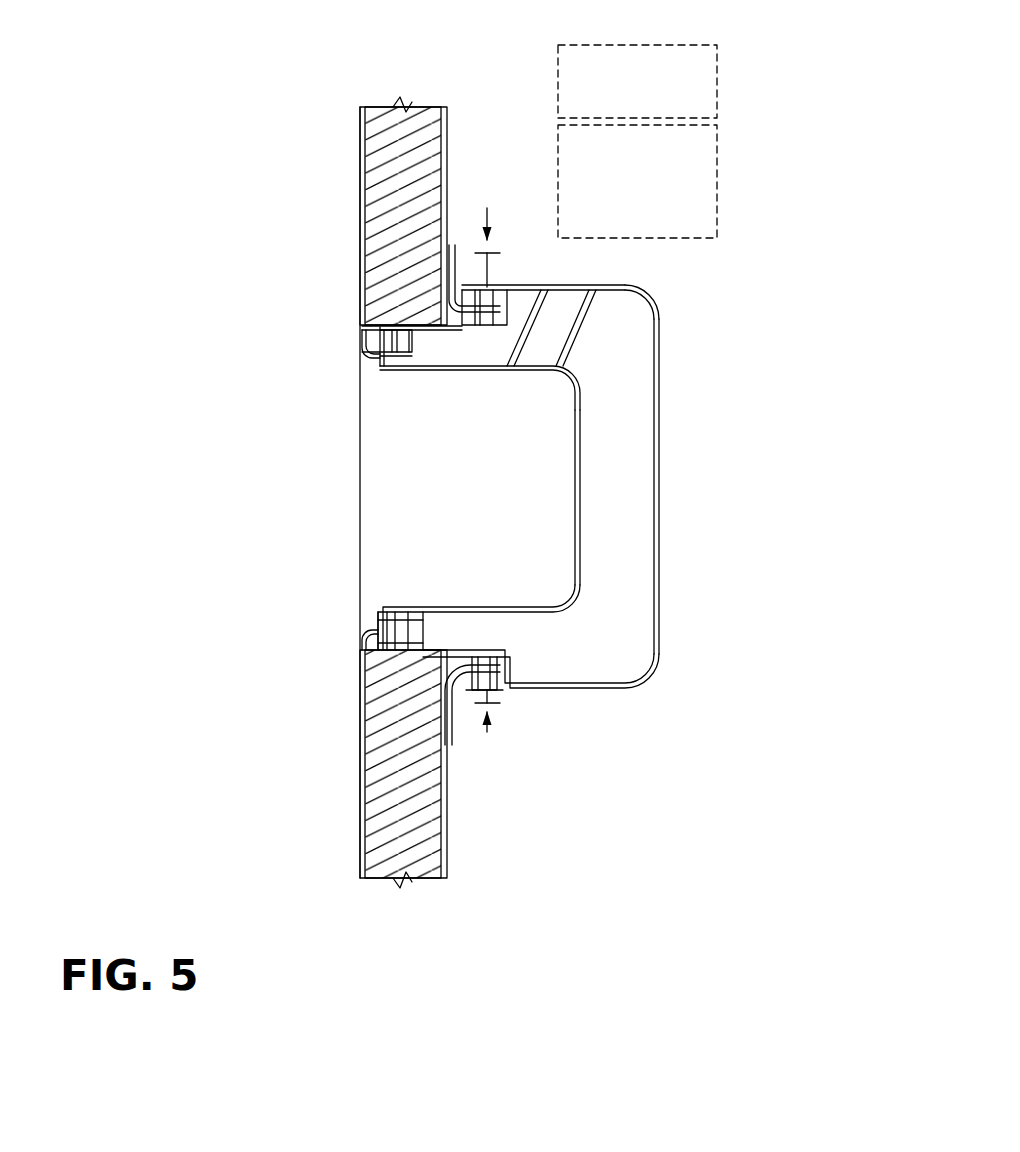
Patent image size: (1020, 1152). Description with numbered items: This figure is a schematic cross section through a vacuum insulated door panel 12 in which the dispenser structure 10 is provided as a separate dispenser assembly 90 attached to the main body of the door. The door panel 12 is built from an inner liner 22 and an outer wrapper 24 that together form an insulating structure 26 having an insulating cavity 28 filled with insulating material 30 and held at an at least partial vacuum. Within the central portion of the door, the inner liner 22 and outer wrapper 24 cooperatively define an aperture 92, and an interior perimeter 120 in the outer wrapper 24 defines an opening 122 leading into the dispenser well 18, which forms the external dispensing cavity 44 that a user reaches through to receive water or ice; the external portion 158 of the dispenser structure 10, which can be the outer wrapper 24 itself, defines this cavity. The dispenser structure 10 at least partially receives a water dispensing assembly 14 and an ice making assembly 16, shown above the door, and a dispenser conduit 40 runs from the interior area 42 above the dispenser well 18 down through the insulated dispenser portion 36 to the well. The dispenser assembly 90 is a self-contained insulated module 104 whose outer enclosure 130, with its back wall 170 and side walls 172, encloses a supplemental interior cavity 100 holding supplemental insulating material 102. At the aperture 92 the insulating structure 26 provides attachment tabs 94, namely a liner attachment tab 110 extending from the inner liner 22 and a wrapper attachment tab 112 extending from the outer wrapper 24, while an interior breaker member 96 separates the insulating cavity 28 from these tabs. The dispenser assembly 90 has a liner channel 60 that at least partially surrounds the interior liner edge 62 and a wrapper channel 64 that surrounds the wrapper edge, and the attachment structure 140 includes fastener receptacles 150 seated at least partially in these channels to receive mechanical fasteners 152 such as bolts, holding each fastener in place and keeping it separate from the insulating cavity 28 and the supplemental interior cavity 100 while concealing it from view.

The dispenser structure 10 is at (708, 311).
The door panel 12 is at (352, 127).
The water dispensing assembly 14 is at (683, 72).
The ice making assembly 16 is at (683, 160).
The dispenser well 18 is at (380, 443).
The inner liner 22 is at (452, 128).
The outer wrapper 24 is at (362, 190).
The insulating structure 26 is at (350, 744).
The insulating cavity 28 is at (407, 800).
The insulating material 30 is at (410, 832).
The insulated dispenser portion 36 is at (563, 262).
The dispenser conduit 40 is at (550, 320).
The interior area 42 is at (638, 274).
The external dispensing cavity 44 is at (400, 519).
The liner channel 60 is at (360, 680).
The interior liner edge 62 is at (478, 318).
The wrapper channel 64 is at (378, 639).
The dispenser assembly 90 is at (642, 472).
The aperture 92 is at (362, 358).
The attachment tab 94 is at (375, 622).
The interior breaker member 96 is at (533, 345).
The supplemental interior cavity 100 is at (610, 637).
The supplemental insulating material 102 is at (598, 666).
The insulated module 104 is at (685, 478).
The liner attachment tab 110 is at (450, 300).
The wrapper attachment tab 112 is at (380, 350).
The interior perimeter 120 is at (357, 425).
The opening 122 is at (356, 493).
The outer enclosure 130 is at (666, 603).
The attachment structure 140 is at (510, 701).
The fastener receptacle 150 is at (440, 703).
The mechanical fastener 152 is at (460, 703).
The external portion 158 is at (577, 528).
The back wall 170 is at (664, 569).
The side wall 172 is at (470, 515).